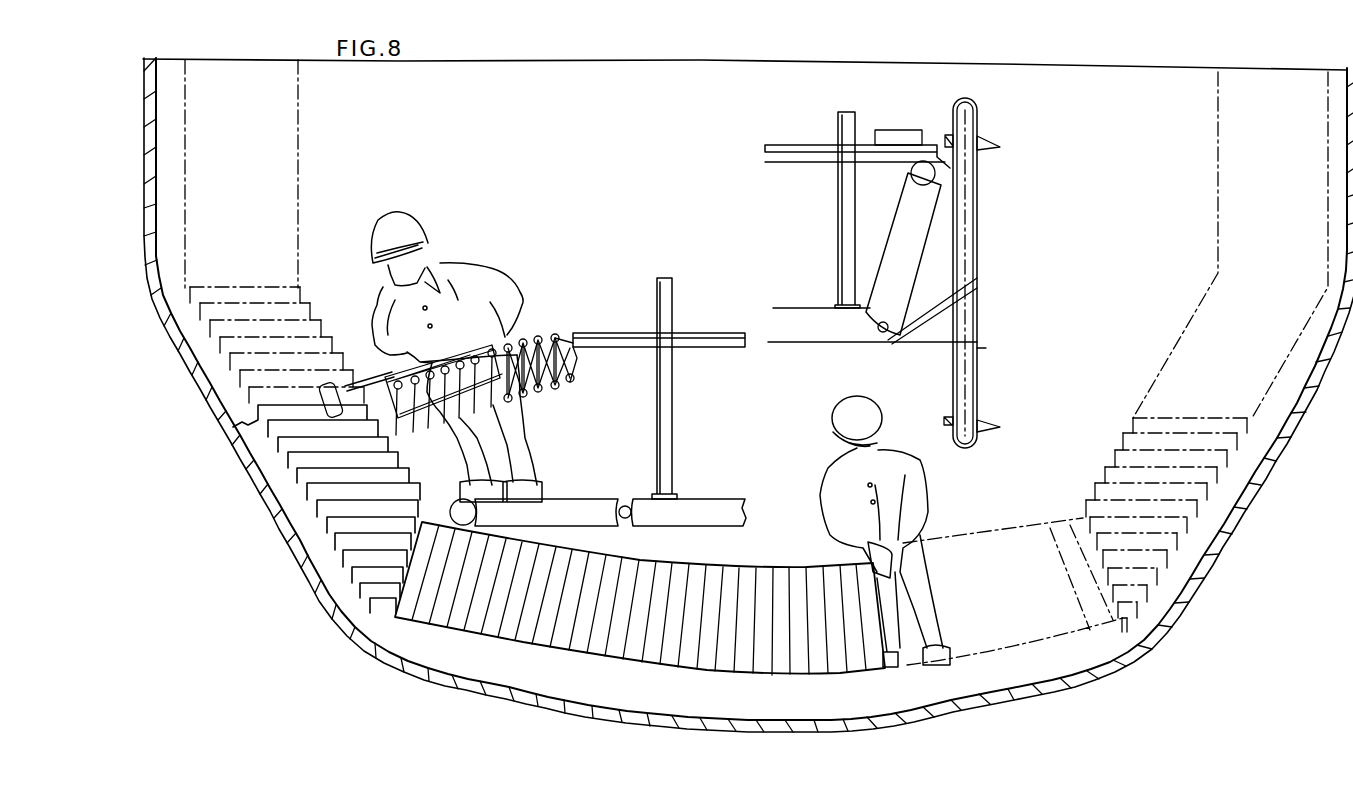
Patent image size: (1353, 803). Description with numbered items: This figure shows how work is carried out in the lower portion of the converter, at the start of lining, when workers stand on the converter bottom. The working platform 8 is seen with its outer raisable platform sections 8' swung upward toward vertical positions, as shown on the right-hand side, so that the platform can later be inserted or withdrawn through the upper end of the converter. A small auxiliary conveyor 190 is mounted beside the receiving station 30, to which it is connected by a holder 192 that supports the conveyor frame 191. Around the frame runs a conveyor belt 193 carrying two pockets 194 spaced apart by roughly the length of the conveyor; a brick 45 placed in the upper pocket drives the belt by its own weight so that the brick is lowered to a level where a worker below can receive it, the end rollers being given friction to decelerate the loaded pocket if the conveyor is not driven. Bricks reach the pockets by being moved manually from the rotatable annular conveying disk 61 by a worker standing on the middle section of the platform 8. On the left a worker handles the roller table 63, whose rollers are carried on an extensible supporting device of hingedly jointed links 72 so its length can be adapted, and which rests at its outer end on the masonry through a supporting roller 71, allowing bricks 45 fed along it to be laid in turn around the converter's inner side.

The platform 8 is at (744, 398).
The raisable platform section 8' is at (695, 343).
The receiving station 30 is at (713, 332).
The brick 45 is at (478, 333).
The annular conveying disk 61 is at (596, 333).
The roller table 63 is at (549, 327).
The supporting roller 71 is at (348, 378).
The hingedly jointed links 72 is at (573, 362).
The auxiliary conveyor 190 is at (989, 199).
The frame 191 is at (963, 323).
The holder 192 is at (983, 298).
The conveyor belt 193 is at (995, 352).
The pocket 194 is at (990, 150).